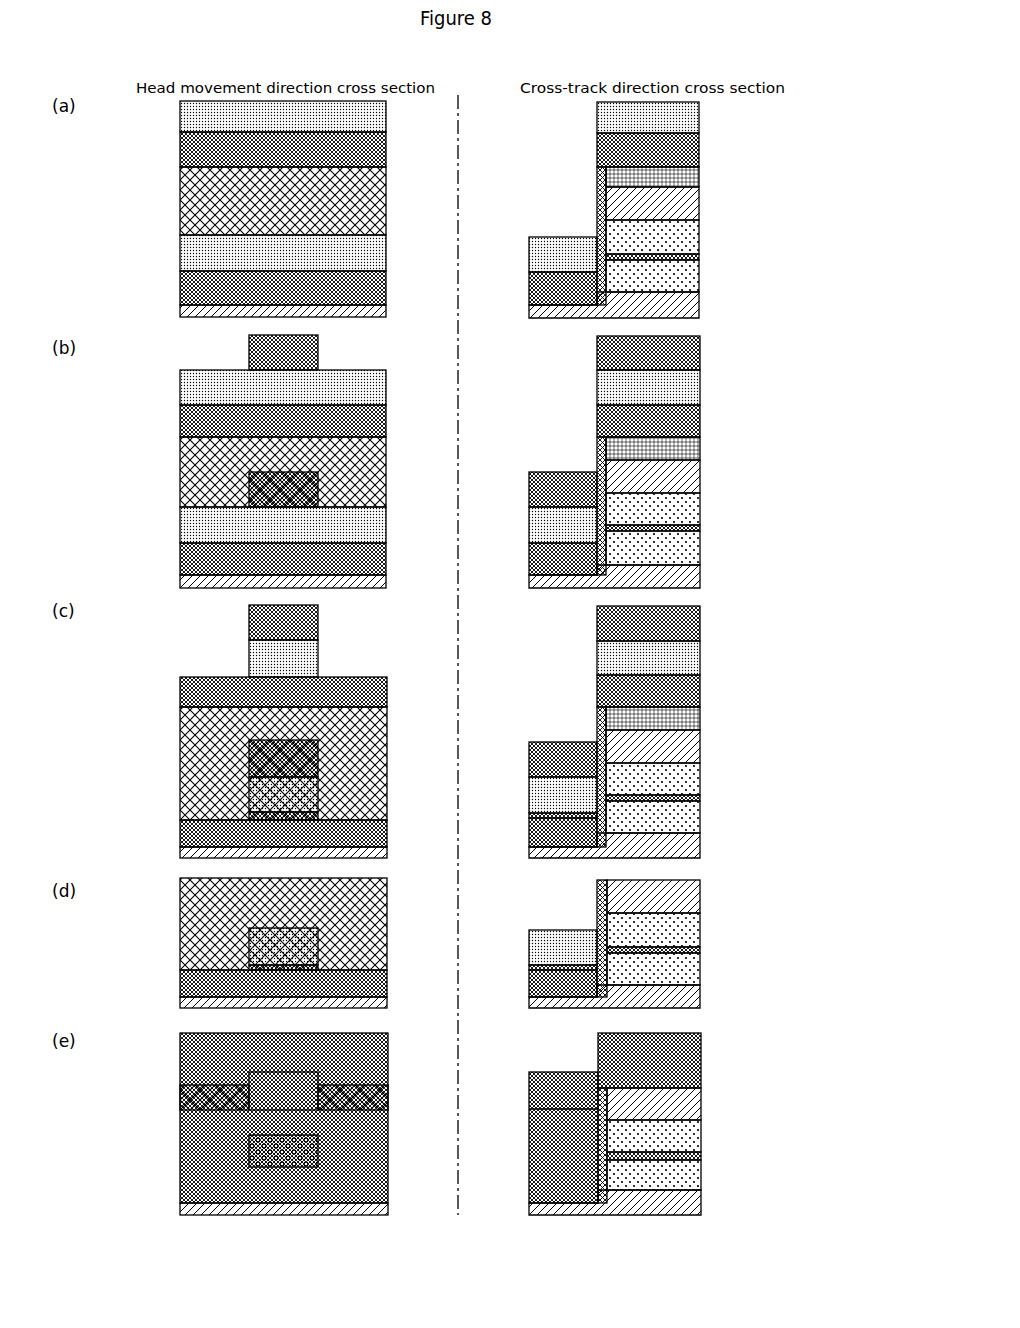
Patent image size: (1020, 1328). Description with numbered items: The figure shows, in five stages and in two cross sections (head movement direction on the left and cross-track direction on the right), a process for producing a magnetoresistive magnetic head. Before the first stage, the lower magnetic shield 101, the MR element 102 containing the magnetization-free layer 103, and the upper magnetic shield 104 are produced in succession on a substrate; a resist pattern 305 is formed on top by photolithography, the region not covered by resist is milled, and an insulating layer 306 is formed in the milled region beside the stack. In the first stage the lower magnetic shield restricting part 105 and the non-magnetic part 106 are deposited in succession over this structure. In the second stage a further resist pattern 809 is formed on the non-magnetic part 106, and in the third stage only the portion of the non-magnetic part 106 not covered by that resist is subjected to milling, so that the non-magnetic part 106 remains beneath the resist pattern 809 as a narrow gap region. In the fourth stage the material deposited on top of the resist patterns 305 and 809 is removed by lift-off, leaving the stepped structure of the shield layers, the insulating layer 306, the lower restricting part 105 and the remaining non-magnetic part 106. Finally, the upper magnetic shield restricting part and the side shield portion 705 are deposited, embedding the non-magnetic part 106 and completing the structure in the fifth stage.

The lower magnetic shield 101 is at (700, 303).
The MR element 102 is at (718, 258).
The magnetization-free layer 103 is at (705, 222).
The upper magnetic shield 104 is at (700, 203).
The lower magnetic shield restricting part 105 is at (180, 294).
The non-magnetic part 106 is at (180, 262).
The resist pattern 305 is at (700, 175).
The insulating layer 306 is at (180, 205).
The side shield portion 705 is at (388, 1176).
The resist pattern 809 is at (240, 470).